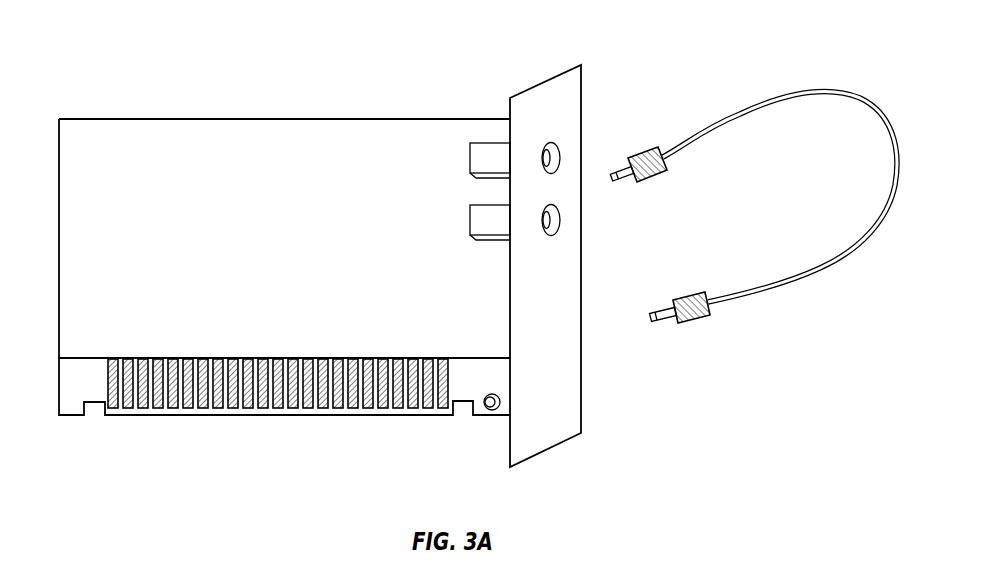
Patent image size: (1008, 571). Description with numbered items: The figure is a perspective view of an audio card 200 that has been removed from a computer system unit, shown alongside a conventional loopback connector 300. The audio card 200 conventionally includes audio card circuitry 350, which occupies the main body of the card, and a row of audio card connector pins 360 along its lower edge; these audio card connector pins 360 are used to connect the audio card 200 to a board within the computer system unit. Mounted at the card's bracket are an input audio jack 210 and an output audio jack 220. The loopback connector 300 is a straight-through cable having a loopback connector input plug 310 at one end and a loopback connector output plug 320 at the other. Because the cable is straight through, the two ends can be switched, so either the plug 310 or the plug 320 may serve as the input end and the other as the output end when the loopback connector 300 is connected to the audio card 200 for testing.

The audio card circuitry 350 is at (245, 137).
The audio card connector pins 360 is at (187, 415).
The audio card 200 is at (547, 77).
The input audio jack 210 is at (560, 155).
The output audio jack 220 is at (543, 230).
The loopback connector 300 is at (793, 86).
The loopback connector input plug 310 is at (655, 178).
The loopback connector output plug 320 is at (692, 322).